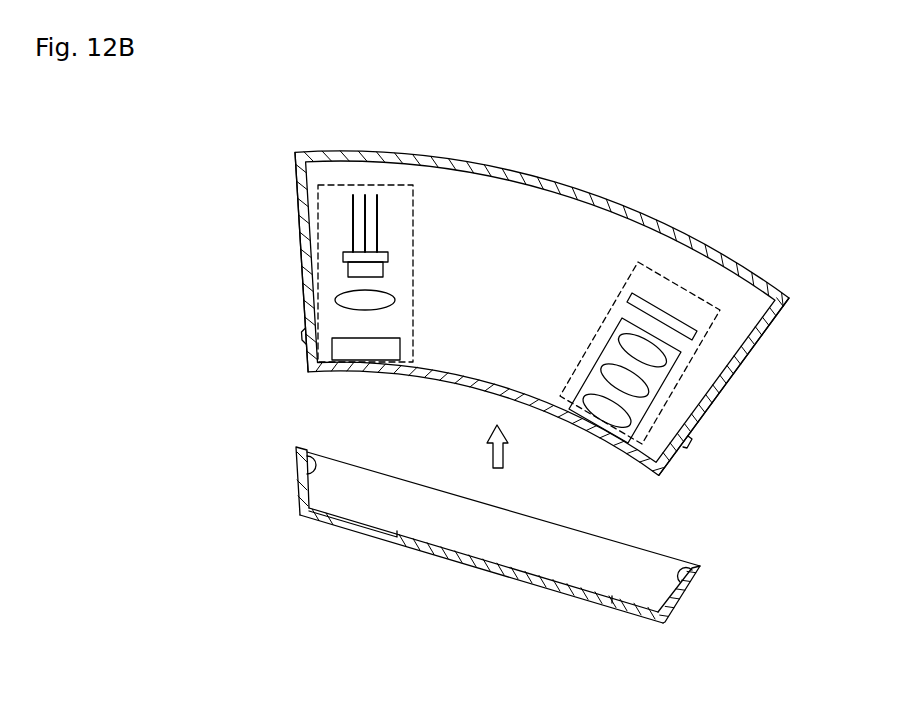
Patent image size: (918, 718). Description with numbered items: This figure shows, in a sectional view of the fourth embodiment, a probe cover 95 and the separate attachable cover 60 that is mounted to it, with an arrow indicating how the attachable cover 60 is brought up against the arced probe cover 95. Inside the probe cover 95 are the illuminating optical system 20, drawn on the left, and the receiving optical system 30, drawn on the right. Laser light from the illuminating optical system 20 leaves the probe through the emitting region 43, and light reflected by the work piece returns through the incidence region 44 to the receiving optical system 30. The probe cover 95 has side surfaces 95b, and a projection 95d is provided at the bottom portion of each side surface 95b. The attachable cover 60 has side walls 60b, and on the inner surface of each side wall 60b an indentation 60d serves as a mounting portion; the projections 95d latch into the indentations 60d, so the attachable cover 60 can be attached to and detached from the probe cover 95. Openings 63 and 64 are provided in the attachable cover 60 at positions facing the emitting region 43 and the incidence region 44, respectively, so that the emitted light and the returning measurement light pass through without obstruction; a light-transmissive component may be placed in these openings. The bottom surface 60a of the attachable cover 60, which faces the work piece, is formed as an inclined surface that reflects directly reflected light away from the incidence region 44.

The illuminating optical system 20 is at (368, 184).
The receiving optical system 30 is at (698, 290).
The emitting region 43 is at (366, 373).
The incidence region 44 is at (592, 422).
The attachable cover 60 is at (491, 542).
The bottom surface 60a is at (470, 572).
The side walls 60b is at (296, 460).
The indentation 60d is at (309, 466).
The opening 63 is at (383, 543).
The opening 64 is at (603, 609).
The probe cover 95 is at (590, 185).
The side surfaces 95b is at (300, 239).
The projection 95d is at (301, 333).